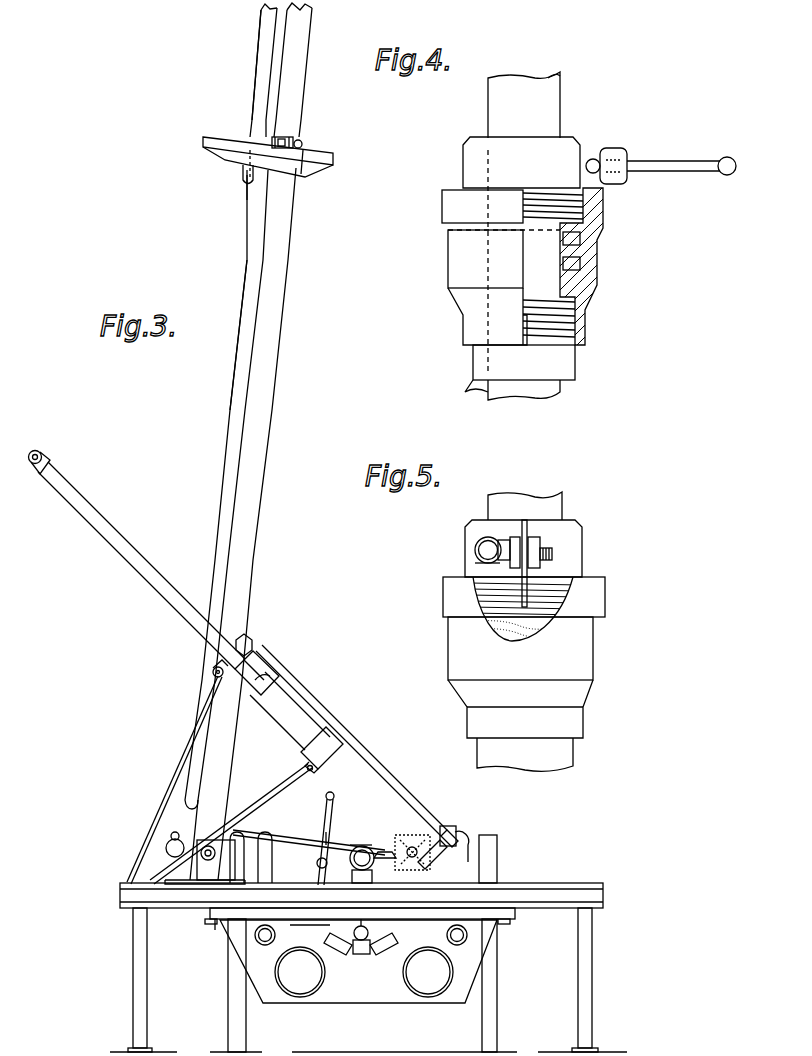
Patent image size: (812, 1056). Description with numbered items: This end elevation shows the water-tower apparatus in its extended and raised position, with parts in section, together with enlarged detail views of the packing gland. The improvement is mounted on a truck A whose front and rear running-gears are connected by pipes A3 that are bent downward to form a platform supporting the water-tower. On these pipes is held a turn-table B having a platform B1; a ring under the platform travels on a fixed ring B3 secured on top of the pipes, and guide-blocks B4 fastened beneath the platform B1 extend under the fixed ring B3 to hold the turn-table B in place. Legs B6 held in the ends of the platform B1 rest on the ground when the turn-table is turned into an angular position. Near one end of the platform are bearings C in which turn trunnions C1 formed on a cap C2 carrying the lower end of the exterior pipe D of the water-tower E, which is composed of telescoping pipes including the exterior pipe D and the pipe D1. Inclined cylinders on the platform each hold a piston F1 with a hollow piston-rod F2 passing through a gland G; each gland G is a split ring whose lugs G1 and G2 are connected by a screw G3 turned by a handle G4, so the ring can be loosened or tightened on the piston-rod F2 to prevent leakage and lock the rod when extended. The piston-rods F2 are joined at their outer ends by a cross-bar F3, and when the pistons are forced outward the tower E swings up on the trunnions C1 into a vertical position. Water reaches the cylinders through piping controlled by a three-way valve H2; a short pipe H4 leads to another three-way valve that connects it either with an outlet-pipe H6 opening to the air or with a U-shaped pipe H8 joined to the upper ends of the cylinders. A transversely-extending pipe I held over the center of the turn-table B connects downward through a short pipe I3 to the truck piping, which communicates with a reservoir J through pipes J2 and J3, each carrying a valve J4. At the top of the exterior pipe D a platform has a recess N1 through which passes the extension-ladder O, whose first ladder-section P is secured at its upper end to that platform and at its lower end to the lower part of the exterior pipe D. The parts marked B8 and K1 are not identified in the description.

In FIG. 3, the truck A is at (358, 975).
In FIG. 3, the pipes A3 is at (254, 936).
In FIG. 3, the turn-table B is at (497, 845).
In FIG. 3, the platform B1 is at (540, 879).
In FIG. 3, the ring B3 is at (210, 918).
In FIG. 3, the guide-blocks B4 is at (210, 908).
In FIG. 3, the legs B6 is at (140, 997).
In FIG. 3, the cross member B8 is at (310, 935).
In FIG. 3, the bearings C is at (175, 871).
In FIG. 3, the trunnions C1 is at (309, 836).
In FIG. 3, the cap C2 is at (275, 788).
In FIG. 3, the exterior pipe D is at (272, 447).
In FIG. 4, the exterior pipe D is at (493, 370).
In FIG. 5, the exterior pipe D is at (560, 764).
In FIG. 3, the telescoping pipe D1 is at (300, 113).
In FIG. 4, the telescoping pipe D1 is at (495, 107).
In FIG. 5, the telescoping pipe D1 is at (555, 510).
In FIG. 3, the water-tower E is at (206, 423).
In FIG. 3, the piston F1 is at (262, 76).
In FIG. 3, the hollow piston-rod F2 is at (173, 600).
In FIG. 3, the cross-bar F3 is at (42, 458).
In FIG. 3, the gland G is at (300, 146).
In FIG. 5, the gland G is at (580, 566).
In FIG. 3, the lug G1 is at (246, 638).
In FIG. 4, the lug G1 is at (521, 254).
In FIG. 5, the lug G1 is at (533, 538).
In FIG. 4, the lug G2 is at (589, 155).
In FIG. 5, the lug G2 is at (514, 538).
In FIG. 4, the screw G3 is at (616, 158).
In FIG. 5, the screw G3 is at (475, 564).
In FIG. 4, the handle G4 is at (670, 162).
In FIG. 5, the handle G4 is at (480, 546).
In FIG. 3, the three-way valve H2 is at (326, 837).
In FIG. 3, the short pipe H4 is at (349, 940).
In FIG. 3, the outlet-pipe H6 is at (390, 842).
In FIG. 3, the U-shaped pipe H8 is at (378, 749).
In FIG. 3, the transversely-extending pipe I is at (365, 835).
In FIG. 4, the transversely-extending pipe I is at (620, 287).
In FIG. 5, the transversely-extending pipe I is at (524, 657).
In FIG. 3, the short pipe I3 is at (166, 847).
In FIG. 3, the reservoir J is at (364, 972).
In FIG. 3, the pipe J2 is at (378, 960).
In FIG. 3, the pipe J3 is at (368, 960).
In FIG. 3, the valve J4 is at (345, 960).
In FIG. 3, the rod K1 is at (320, 818).
In FIG. 3, the recess N1 is at (335, 156).
In FIG. 3, the extension-ladder O is at (222, 190).
In FIG. 3, the ladder-section P is at (228, 462).